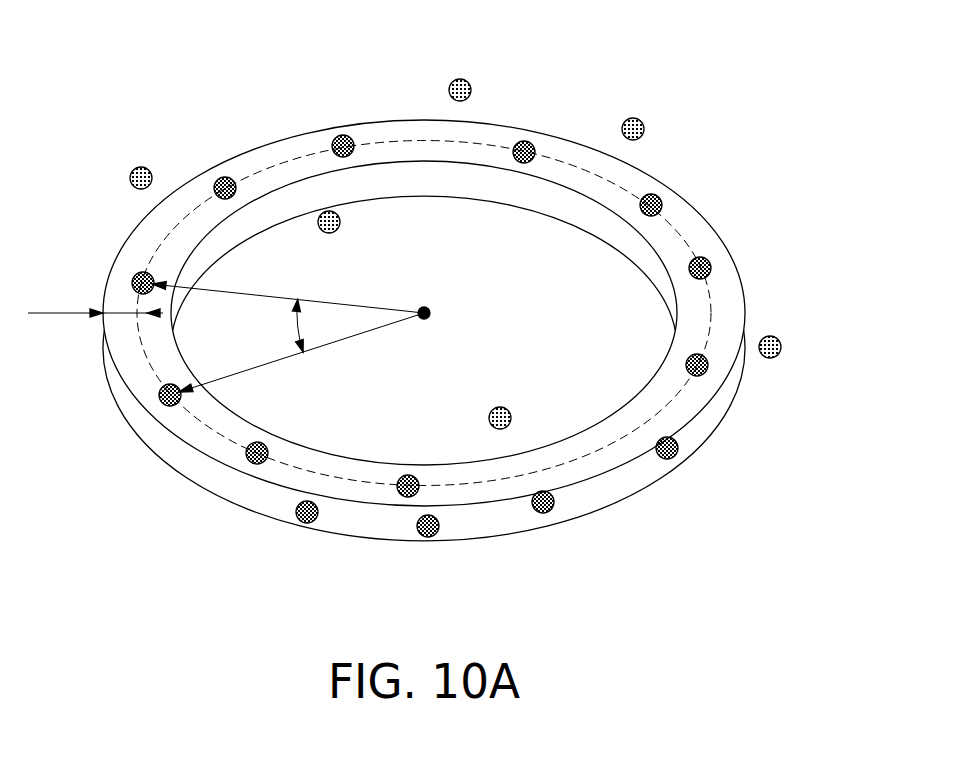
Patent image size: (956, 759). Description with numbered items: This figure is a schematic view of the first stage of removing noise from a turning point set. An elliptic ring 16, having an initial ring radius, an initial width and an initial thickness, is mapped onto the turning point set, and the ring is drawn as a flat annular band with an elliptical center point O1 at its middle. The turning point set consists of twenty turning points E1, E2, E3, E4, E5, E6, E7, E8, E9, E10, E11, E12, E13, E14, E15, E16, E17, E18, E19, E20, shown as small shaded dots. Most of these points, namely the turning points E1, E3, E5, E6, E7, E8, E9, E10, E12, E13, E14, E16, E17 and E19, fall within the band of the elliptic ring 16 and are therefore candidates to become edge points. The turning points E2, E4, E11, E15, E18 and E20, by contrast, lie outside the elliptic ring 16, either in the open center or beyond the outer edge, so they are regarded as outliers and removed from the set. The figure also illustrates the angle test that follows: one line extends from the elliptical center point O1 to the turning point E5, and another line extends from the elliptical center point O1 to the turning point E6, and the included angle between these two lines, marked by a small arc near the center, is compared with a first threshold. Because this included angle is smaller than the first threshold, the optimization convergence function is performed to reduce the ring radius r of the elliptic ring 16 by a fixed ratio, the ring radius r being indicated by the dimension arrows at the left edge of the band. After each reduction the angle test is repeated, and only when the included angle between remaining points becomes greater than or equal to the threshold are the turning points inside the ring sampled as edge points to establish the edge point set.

The elliptic ring 16 is at (188, 458).
The elliptical center point O1 is at (444, 328).
The ring radius r is at (95, 300).
The turning point E1 is at (343, 135).
The turning point E2 is at (336, 229).
The turning point E3 is at (223, 177).
The turning point E4 is at (140, 167).
The turning point E5 is at (137, 276).
The turning point E6 is at (162, 392).
The turning point E7 is at (263, 447).
The turning point E8 is at (303, 522).
The turning point E9 is at (409, 476).
The turning point E10 is at (429, 537).
The turning point E11 is at (502, 408).
The turning point E12 is at (553, 510).
The turning point E13 is at (673, 457).
The turning point E14 is at (690, 360).
The turning point E15 is at (775, 340).
The turning point E16 is at (711, 265).
The turning point E17 is at (660, 198).
The turning point E18 is at (634, 118).
The turning point E19 is at (527, 141).
The turning point E20 is at (461, 80).